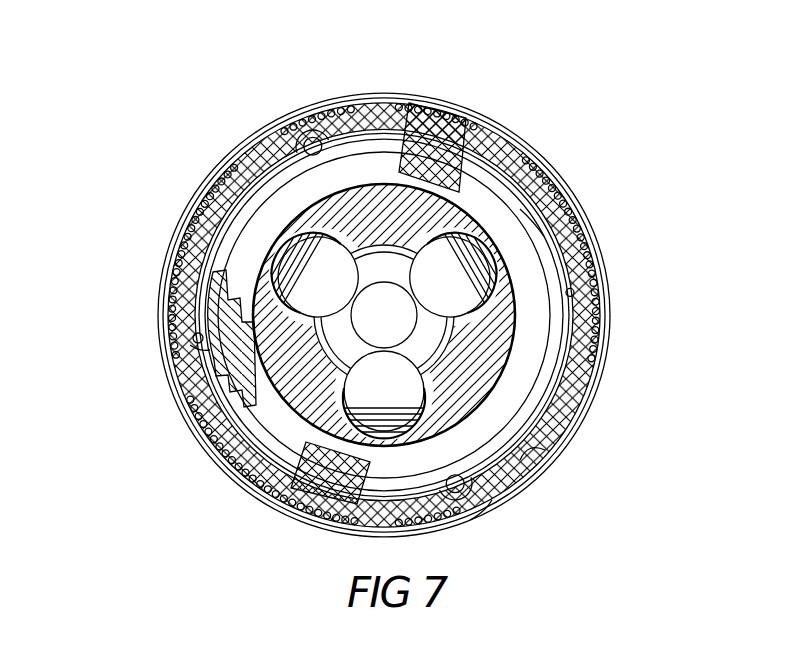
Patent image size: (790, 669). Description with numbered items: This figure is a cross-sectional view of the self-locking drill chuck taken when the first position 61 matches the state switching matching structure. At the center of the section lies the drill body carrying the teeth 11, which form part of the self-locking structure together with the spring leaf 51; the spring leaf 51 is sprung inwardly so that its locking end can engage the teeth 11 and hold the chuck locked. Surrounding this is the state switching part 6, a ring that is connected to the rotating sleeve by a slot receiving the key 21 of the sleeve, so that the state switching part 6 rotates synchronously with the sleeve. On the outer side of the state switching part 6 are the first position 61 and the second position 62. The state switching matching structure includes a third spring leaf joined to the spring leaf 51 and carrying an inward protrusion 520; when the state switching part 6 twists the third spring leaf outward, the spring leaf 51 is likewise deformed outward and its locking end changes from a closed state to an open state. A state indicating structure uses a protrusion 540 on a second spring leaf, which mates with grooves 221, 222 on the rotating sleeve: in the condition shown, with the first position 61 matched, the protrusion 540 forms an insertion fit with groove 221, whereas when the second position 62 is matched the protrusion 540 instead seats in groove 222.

The protrusion 540 is at (283, 120).
The key 21 is at (447, 150).
The state switching part 6 is at (480, 200).
The second position 62 is at (580, 210).
The teeth 11 is at (228, 292).
The inward protrusion 520 is at (163, 310).
The first position 61 is at (207, 337).
The spring leaf 51 is at (200, 363).
The groove 221 is at (535, 448).
The groove 222 is at (483, 510).